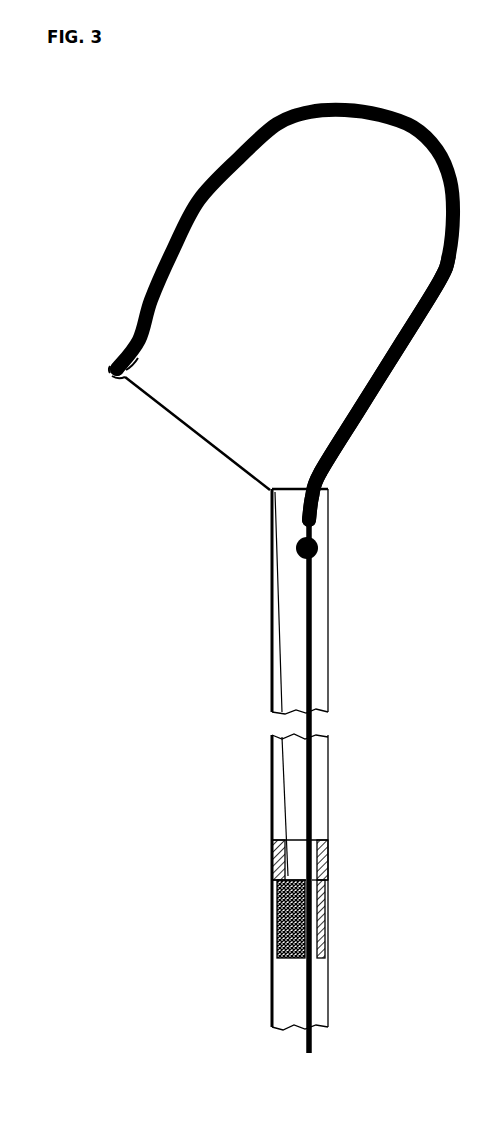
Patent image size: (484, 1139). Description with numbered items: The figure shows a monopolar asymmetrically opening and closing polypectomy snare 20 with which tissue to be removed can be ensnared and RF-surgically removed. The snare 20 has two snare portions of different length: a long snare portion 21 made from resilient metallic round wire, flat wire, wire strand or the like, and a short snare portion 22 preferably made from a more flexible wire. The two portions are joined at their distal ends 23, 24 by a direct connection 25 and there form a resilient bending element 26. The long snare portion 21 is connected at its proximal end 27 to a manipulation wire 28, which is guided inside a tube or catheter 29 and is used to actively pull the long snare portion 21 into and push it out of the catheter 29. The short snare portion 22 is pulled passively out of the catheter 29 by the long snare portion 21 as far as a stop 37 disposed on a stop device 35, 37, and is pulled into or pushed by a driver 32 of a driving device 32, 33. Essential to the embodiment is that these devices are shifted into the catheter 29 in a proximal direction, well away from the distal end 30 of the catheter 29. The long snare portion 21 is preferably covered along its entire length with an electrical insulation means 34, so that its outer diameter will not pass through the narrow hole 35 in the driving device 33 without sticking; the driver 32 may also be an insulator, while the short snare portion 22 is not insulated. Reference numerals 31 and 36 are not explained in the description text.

The snare 20 is at (324, 273).
The long snare portion 21 is at (363, 383).
The short snare portion 22 is at (200, 427).
The distal end 23 is at (112, 354).
The distal end 24 is at (124, 381).
The direct connection 25 is at (107, 372).
The resilient bending element 26 is at (140, 378).
The proximal end 27 is at (318, 518).
The manipulation wire 28 is at (315, 1003).
The catheter 29 is at (330, 663).
The distal end of the catheter 30 is at (270, 490).
The band lower portion 31 is at (313, 480).
The driver 32 is at (320, 553).
The driving device 33 is at (330, 918).
The electrical insulation means 34 is at (347, 445).
The stop device 35 is at (300, 920).
The inner line 36 is at (268, 486).
The stop 37 is at (272, 862).